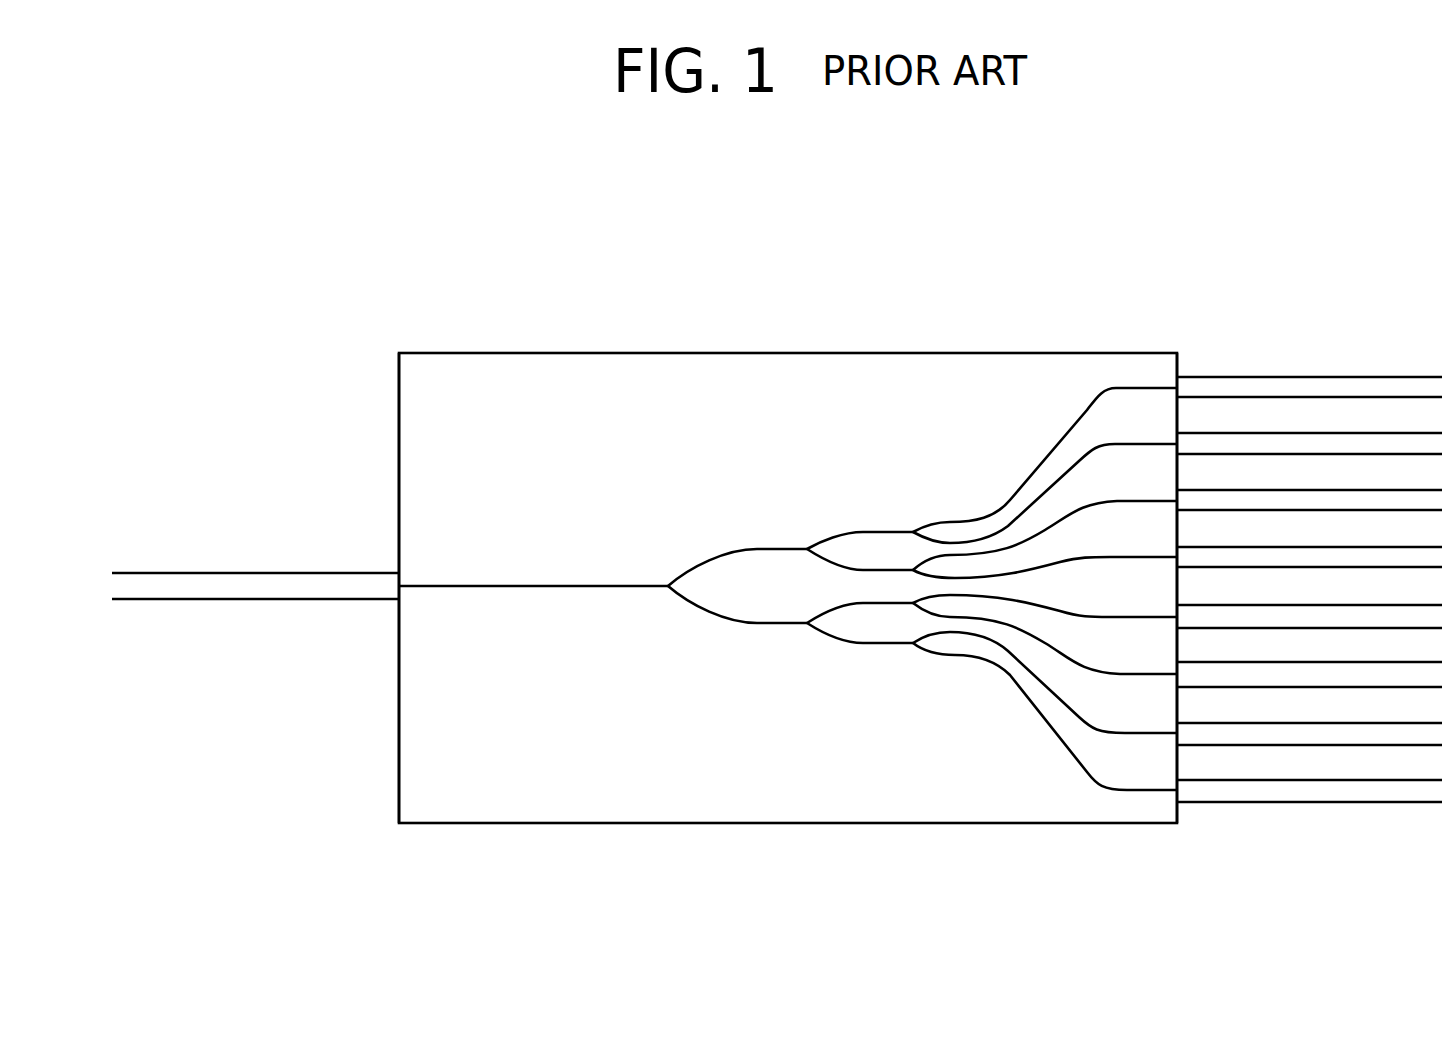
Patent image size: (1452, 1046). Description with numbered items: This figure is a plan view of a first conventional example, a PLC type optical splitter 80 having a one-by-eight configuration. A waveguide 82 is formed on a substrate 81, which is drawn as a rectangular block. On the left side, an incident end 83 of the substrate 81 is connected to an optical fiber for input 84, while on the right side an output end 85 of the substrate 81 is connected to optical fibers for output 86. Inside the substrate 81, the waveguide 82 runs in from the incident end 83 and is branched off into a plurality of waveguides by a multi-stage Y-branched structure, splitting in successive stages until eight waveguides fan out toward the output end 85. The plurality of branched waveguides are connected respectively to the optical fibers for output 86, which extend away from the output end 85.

The PLC type optical splitter 80 is at (770, 565).
The substrate 81 is at (777, 803).
The waveguide 82 is at (758, 547).
The incident end 83 is at (399, 712).
The optical fiber for input 84 is at (210, 600).
The output end 85 is at (1178, 812).
The optical fibers for output 86 is at (1315, 802).